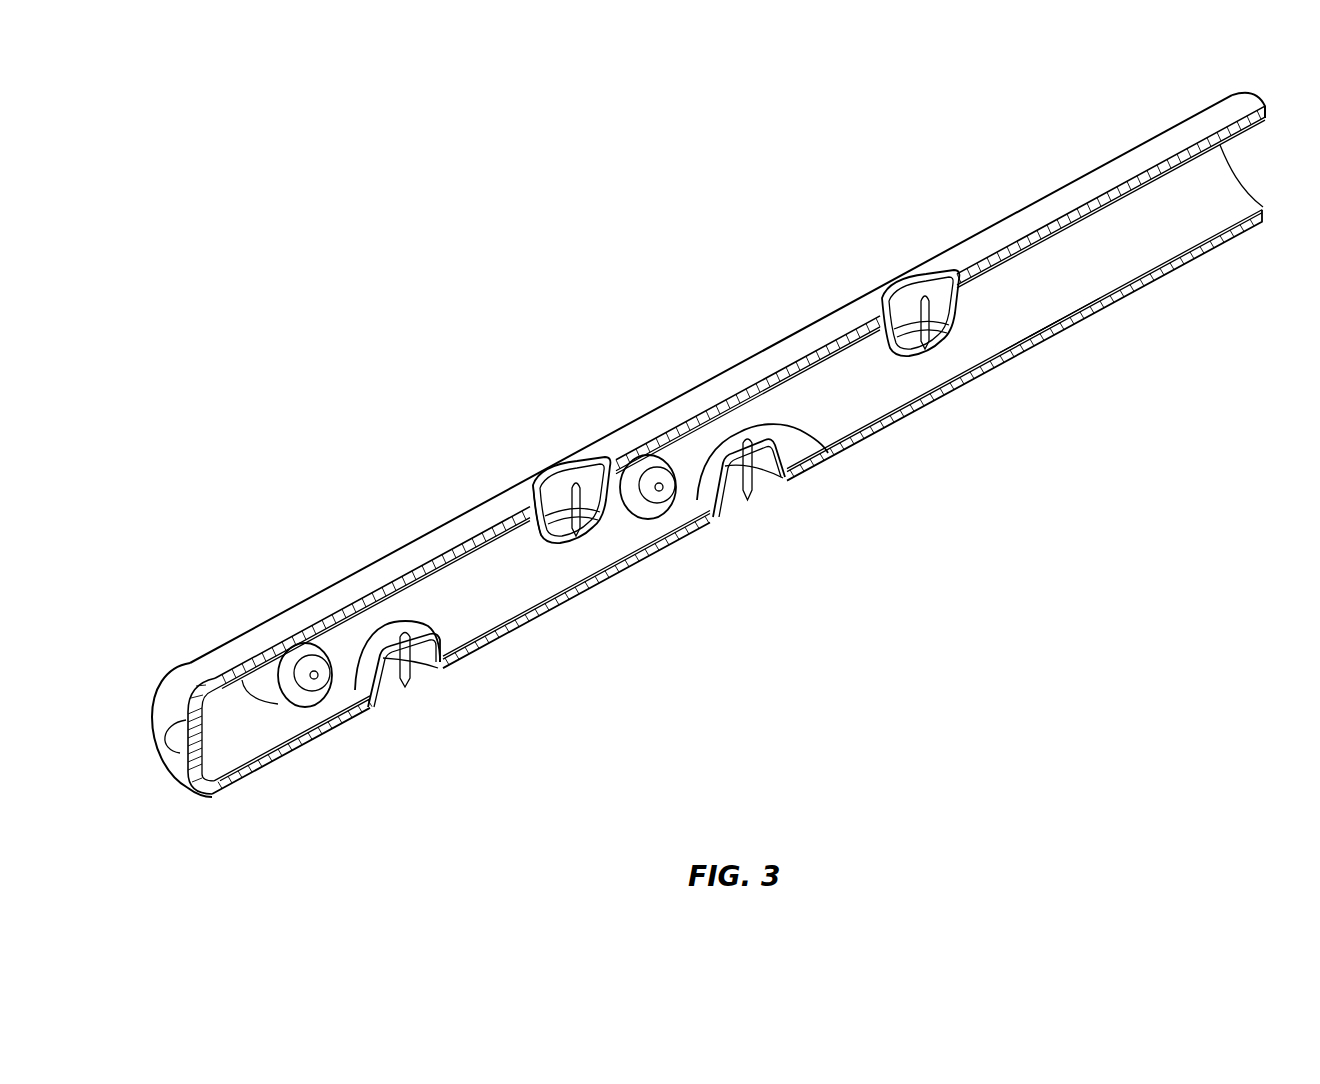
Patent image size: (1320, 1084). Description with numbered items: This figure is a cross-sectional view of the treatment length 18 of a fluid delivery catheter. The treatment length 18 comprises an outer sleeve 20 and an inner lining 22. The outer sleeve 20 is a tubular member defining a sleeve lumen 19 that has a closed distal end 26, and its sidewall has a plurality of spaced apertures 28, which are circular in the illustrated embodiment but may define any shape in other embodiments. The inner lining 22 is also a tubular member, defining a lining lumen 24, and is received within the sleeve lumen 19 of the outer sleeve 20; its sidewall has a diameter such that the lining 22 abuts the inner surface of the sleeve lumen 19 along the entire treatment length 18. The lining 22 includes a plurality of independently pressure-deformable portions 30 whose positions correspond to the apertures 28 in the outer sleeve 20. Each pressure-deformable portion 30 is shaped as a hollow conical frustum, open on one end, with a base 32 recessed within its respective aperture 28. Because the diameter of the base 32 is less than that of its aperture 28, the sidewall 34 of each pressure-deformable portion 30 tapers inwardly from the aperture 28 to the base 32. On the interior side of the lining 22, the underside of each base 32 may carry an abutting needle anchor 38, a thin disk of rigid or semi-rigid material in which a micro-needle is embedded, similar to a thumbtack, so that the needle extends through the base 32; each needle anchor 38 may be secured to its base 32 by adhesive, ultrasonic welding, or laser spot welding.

The treatment length 18 is at (594, 362).
The sleeve lumen 19 is at (1030, 340).
The outer sleeve 20 is at (1142, 158).
The inner lining 22 is at (1145, 258).
The lining lumen 24 is at (1183, 196).
The closed distal end 26 is at (178, 752).
The apertures 28 is at (905, 250).
The pressure-deformable portions 30 is at (603, 513).
The base 32 is at (758, 438).
The sidewall 34 is at (525, 542).
The needle anchor 38 is at (315, 678).